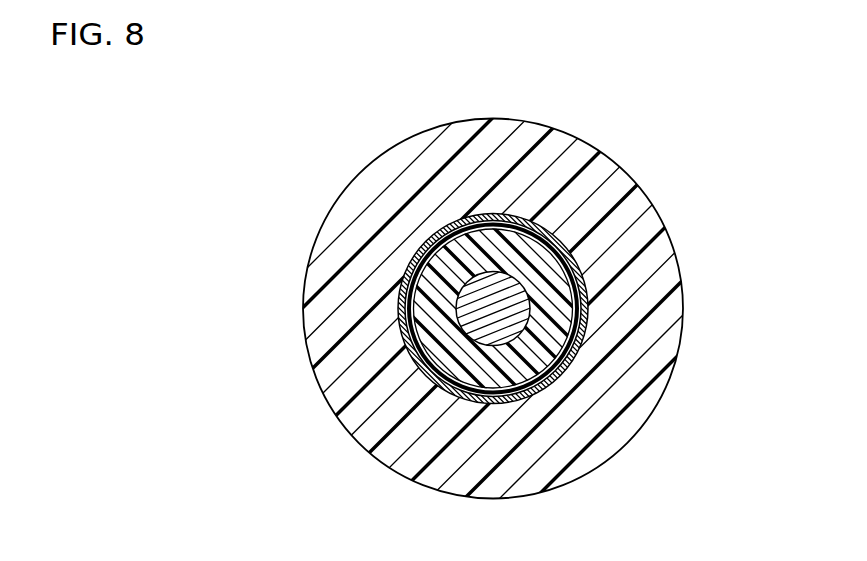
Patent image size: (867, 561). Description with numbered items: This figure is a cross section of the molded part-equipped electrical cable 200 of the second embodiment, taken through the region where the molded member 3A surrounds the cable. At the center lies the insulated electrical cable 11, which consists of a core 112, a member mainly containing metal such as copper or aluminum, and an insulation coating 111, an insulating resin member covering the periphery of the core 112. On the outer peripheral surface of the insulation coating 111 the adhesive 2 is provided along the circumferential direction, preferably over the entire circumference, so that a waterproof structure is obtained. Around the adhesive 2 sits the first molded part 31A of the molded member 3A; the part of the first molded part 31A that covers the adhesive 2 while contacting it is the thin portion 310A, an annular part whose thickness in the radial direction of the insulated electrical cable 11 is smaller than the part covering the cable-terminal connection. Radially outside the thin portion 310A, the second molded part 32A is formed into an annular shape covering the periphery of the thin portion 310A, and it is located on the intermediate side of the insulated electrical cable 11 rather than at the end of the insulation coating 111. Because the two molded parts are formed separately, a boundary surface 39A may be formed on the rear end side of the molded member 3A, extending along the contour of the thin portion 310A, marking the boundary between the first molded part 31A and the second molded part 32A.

The molded part-equipped electrical cable 200 is at (659, 77).
The molded member 3A is at (560, 78).
The first molded part 31A is at (482, 213).
The thin portion 310A is at (488, 310).
The second molded part 32A is at (516, 138).
The boundary surface 39A is at (399, 302).
The adhesive 2 is at (415, 268).
The insulated electrical cable 11 is at (258, 358).
The insulation coating 111 is at (470, 326).
The core 112 is at (435, 355).